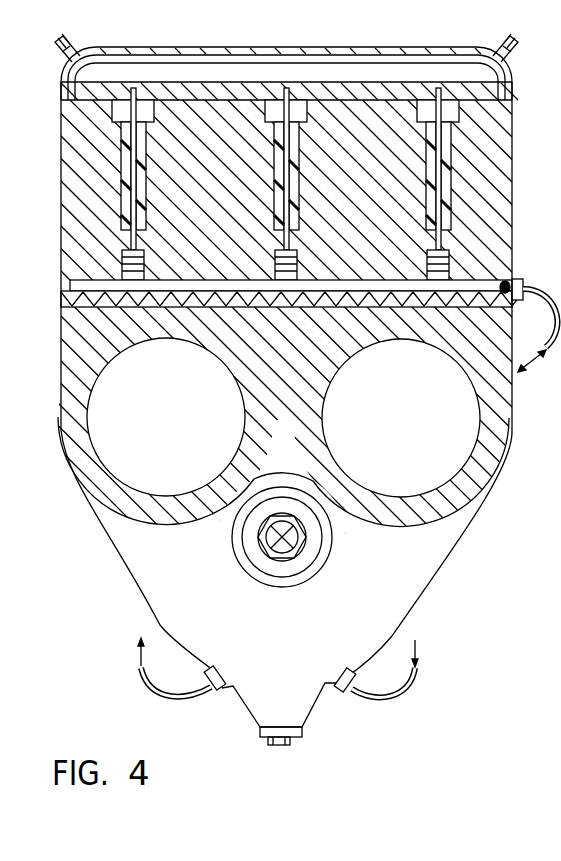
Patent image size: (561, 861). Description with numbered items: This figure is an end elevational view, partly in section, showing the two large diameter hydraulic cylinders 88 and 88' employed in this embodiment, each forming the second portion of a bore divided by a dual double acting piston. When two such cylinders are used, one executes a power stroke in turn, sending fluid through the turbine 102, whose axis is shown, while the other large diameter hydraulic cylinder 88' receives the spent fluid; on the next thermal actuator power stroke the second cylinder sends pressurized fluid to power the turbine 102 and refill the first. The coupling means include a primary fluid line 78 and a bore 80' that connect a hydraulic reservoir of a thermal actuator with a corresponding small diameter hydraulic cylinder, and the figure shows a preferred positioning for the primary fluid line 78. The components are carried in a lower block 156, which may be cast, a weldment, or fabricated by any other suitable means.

The bore 80' is at (520, 262).
The primary fluid line 78 is at (546, 286).
The large diameter hydraulic cylinder 88 is at (166, 417).
The large diameter hydraulic cylinder 88' is at (401, 418).
The turbine 102 is at (259, 537).
The lower block 156 is at (348, 610).